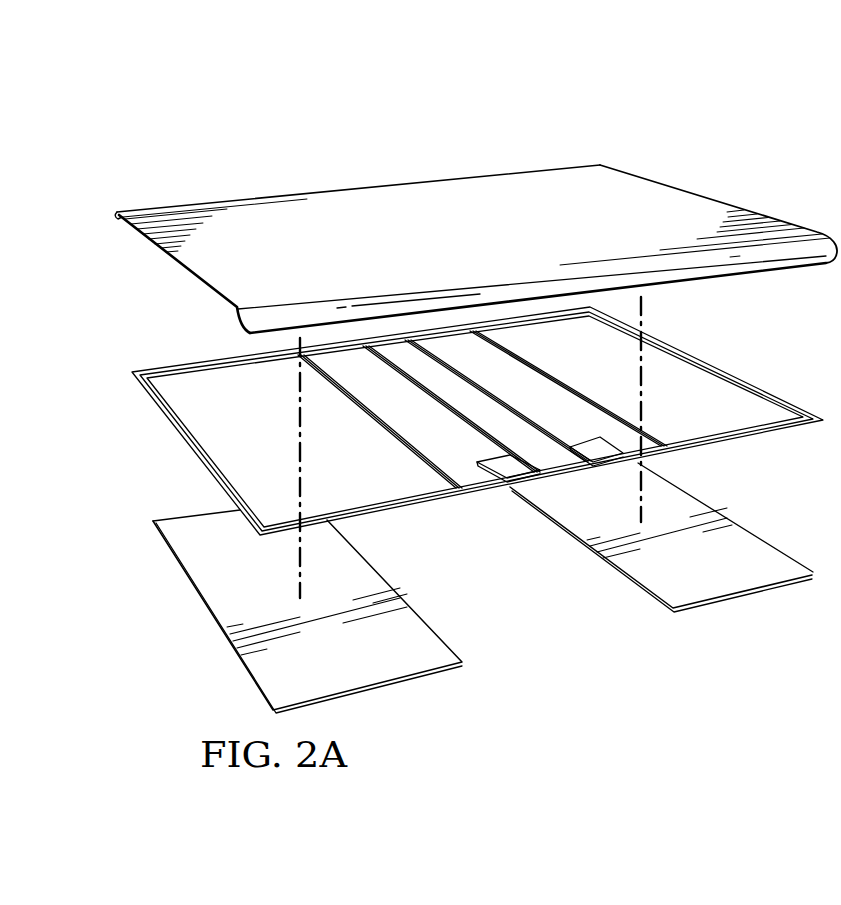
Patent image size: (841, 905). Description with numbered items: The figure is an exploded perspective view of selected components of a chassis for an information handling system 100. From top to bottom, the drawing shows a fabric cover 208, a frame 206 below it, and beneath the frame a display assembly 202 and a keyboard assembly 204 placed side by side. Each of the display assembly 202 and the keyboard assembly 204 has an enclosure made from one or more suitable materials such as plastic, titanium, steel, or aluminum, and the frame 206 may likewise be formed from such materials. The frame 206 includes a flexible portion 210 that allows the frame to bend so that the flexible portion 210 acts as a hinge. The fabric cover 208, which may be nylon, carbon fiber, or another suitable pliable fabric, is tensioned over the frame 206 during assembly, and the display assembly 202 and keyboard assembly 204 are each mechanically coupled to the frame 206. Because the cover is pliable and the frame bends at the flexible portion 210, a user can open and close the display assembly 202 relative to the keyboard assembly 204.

The information handling system 100 is at (265, 119).
The display assembly 202 is at (727, 600).
The keyboard assembly 204 is at (203, 607).
The frame 206 is at (733, 378).
The fabric cover 208 is at (365, 187).
The flexible portion 210 is at (535, 437).